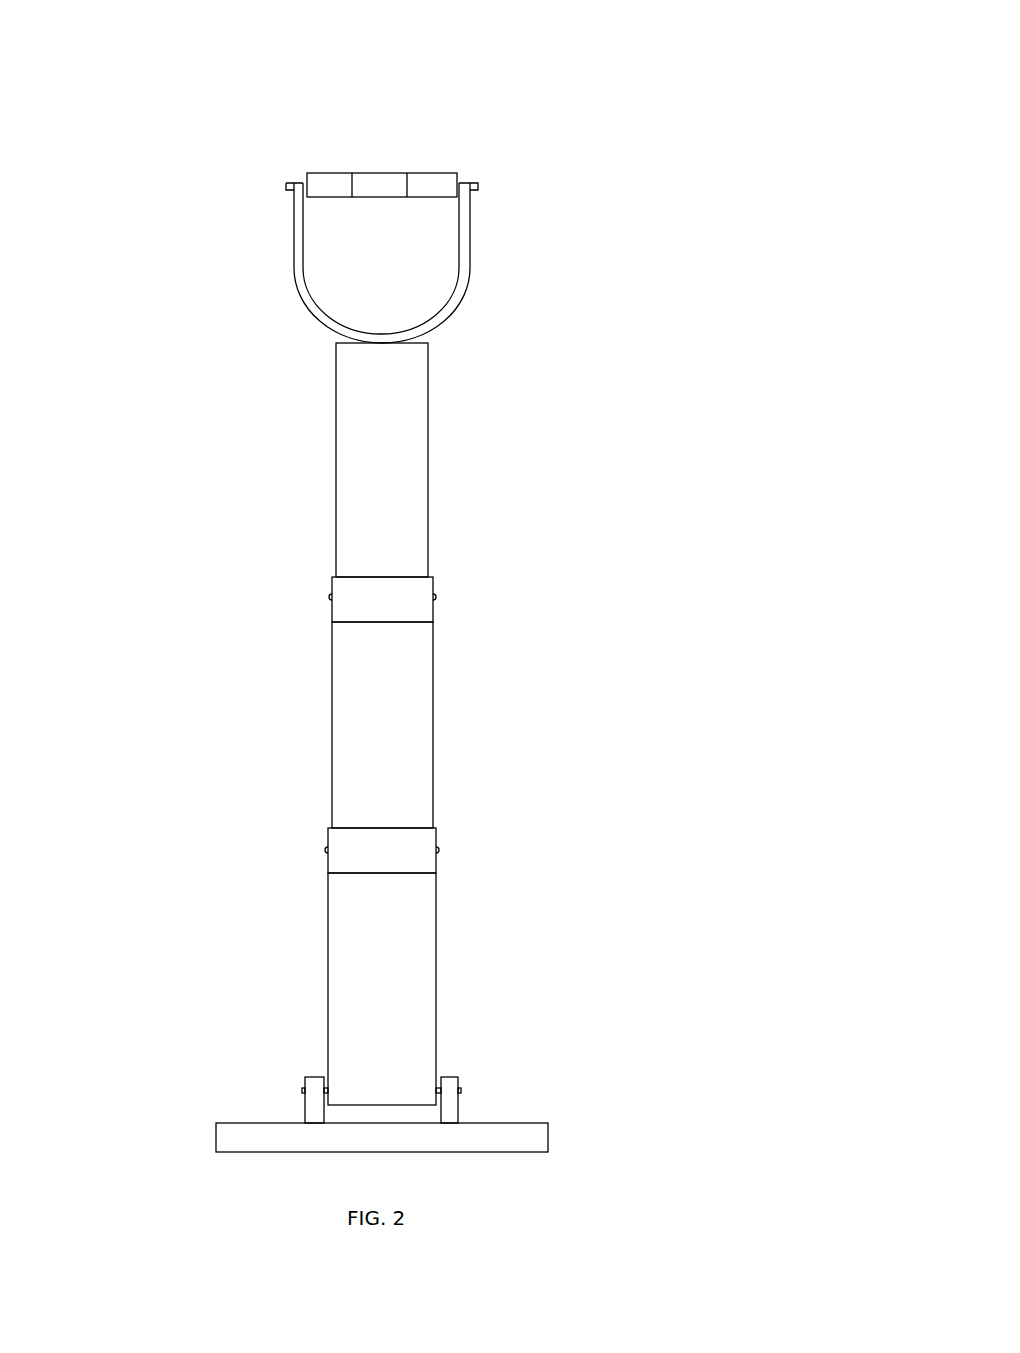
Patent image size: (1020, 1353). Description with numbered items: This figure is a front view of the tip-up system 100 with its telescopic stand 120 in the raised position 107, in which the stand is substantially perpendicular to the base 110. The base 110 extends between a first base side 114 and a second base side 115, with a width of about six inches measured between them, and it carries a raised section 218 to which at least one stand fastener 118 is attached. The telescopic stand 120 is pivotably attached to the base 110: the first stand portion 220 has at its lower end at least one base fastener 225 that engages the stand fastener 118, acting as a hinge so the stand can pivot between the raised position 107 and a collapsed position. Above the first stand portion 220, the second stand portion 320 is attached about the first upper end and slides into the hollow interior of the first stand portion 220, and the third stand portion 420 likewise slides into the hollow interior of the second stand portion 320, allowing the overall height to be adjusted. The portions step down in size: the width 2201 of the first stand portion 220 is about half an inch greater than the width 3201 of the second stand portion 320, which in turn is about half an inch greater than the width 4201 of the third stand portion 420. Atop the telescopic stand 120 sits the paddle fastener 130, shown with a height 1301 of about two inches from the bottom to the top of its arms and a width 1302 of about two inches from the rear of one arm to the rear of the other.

The tip-up system 100 is at (642, 68).
The raised position 107 is at (641, 133).
The base 110 is at (420, 1142).
The first base side 114 is at (227, 1135).
The second base side 115 is at (543, 1135).
The stand fastener 118 is at (303, 1087).
The telescopic stand 120 is at (519, 667).
The paddle fastener 130 is at (467, 282).
The height 1301 is at (273, 163).
The width 1302 is at (473, 150).
The raised section 218 is at (320, 1107).
The first stand portion 220 is at (365, 945).
The width 2201 is at (316, 873).
The base fastener 225 is at (286, 1085).
The second stand portion 320 is at (405, 728).
The width 3201 is at (442, 622).
The third stand portion 420 is at (352, 513).
The width 4201 is at (439, 386).